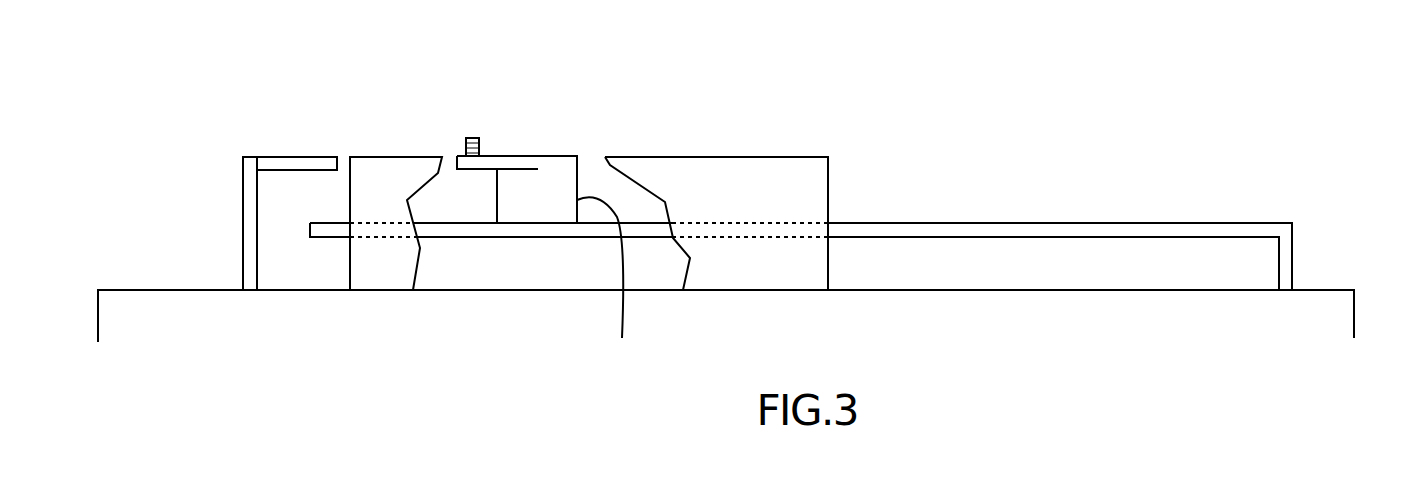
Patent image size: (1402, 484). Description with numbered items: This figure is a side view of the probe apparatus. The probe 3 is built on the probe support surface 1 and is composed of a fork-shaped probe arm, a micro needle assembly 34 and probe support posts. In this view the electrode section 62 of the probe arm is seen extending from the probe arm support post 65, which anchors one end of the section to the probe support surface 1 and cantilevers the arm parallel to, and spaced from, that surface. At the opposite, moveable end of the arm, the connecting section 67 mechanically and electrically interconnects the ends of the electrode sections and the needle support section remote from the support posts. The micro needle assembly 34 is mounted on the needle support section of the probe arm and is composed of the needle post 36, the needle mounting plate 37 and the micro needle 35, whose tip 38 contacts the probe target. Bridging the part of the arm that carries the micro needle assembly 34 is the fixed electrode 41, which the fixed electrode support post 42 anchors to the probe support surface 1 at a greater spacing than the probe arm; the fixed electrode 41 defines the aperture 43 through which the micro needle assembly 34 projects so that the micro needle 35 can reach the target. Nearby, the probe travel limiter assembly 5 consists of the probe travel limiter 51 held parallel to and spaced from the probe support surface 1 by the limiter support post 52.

The probe support surface 1 is at (138, 290).
The probe 3 is at (1073, 221).
The probe travel limiter assembly 5 is at (233, 180).
The micro needle assembly 34 is at (541, 152).
The micro needle 35 is at (483, 147).
The needle post 36 is at (605, 290).
The needle mounting plate 37 is at (478, 170).
The tip 38 is at (470, 138).
The fixed electrode 41 is at (701, 157).
The fixed electrode support post 42 is at (818, 192).
The aperture 43 is at (588, 151).
The probe travel limiter 51 is at (290, 157).
The limiter support post 52 is at (243, 226).
The electrode section 62 is at (1228, 222).
The probe arm support post 65 is at (1293, 250).
The connecting section 67 is at (328, 237).